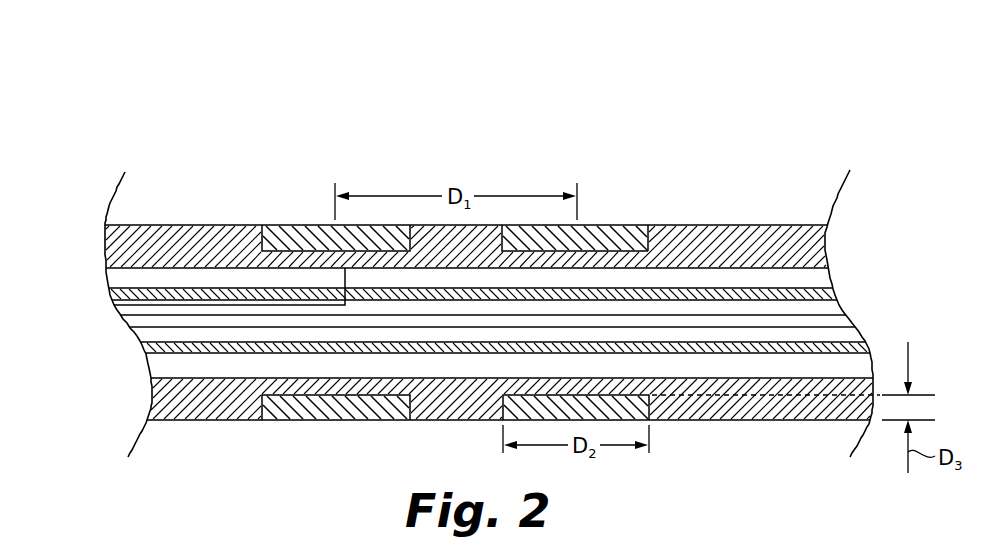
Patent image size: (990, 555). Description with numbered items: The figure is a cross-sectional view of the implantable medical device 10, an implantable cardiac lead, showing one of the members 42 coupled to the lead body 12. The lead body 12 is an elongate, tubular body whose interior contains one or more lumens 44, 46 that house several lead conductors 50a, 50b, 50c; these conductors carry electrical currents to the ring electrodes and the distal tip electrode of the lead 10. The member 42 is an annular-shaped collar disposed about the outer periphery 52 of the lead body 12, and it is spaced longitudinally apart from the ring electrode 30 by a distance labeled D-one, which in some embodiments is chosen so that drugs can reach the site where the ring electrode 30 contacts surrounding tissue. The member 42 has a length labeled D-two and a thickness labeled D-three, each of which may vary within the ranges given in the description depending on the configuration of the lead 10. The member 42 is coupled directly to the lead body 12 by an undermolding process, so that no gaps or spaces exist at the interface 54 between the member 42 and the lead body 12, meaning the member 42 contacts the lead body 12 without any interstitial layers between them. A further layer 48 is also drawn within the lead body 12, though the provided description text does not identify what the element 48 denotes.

The laminated structure 10 is at (601, 92).
The first substrate 12 is at (750, 232).
The first recess 30 is at (296, 228).
The second recess 42 is at (596, 228).
The conductive layer 44 is at (113, 283).
The intermediate layer 46 is at (846, 330).
The adhesive layer 48 is at (822, 295).
The first inner layer 50a is at (128, 315).
The second inner layer 50b is at (758, 318).
The third inner layer 50c is at (803, 329).
The substrate edge region 52 is at (713, 225).
The recess sidewall 54 is at (657, 226).